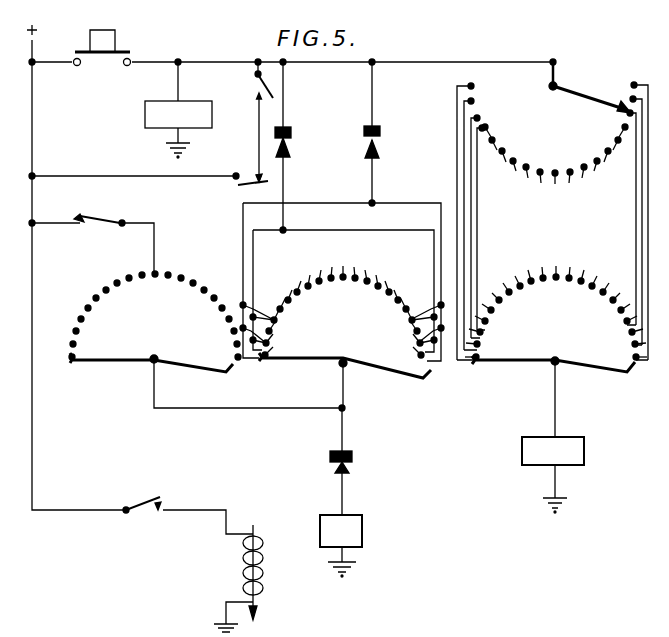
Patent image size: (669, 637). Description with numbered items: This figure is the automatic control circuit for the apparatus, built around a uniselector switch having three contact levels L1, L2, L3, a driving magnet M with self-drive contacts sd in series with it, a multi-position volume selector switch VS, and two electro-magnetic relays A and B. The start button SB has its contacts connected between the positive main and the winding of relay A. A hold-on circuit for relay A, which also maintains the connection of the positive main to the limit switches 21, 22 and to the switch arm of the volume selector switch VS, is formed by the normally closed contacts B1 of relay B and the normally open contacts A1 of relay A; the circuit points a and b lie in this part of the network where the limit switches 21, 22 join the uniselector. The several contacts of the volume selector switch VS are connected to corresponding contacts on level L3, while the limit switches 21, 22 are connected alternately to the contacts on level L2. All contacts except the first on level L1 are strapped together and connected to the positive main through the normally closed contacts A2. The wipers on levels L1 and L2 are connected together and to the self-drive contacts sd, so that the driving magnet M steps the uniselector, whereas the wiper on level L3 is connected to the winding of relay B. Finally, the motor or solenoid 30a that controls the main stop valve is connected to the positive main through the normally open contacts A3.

The start button SB is at (115, 42).
The relay A/3 A is at (145, 112).
The normally open contacts A1 is at (264, 84).
The normally closed contacts A2 is at (93, 235).
The normally open contacts A3 is at (158, 497).
The relay B/1 B is at (522, 458).
The normally closed contacts B1 is at (241, 186).
The limit switch 22 is at (292, 140).
The limit switch 21 is at (380, 138).
The circuit point a is at (375, 201).
The circuit point b is at (282, 232).
The uniselector contact level L1 is at (165, 328).
The uniselector contact level L2 is at (354, 331).
The uniselector contact level L3 is at (566, 333).
The multi-position volume selector switch VS is at (560, 133).
The self-drive contacts sd is at (354, 463).
The driving magnet M is at (362, 531).
The motor or solenoid 30a is at (262, 572).